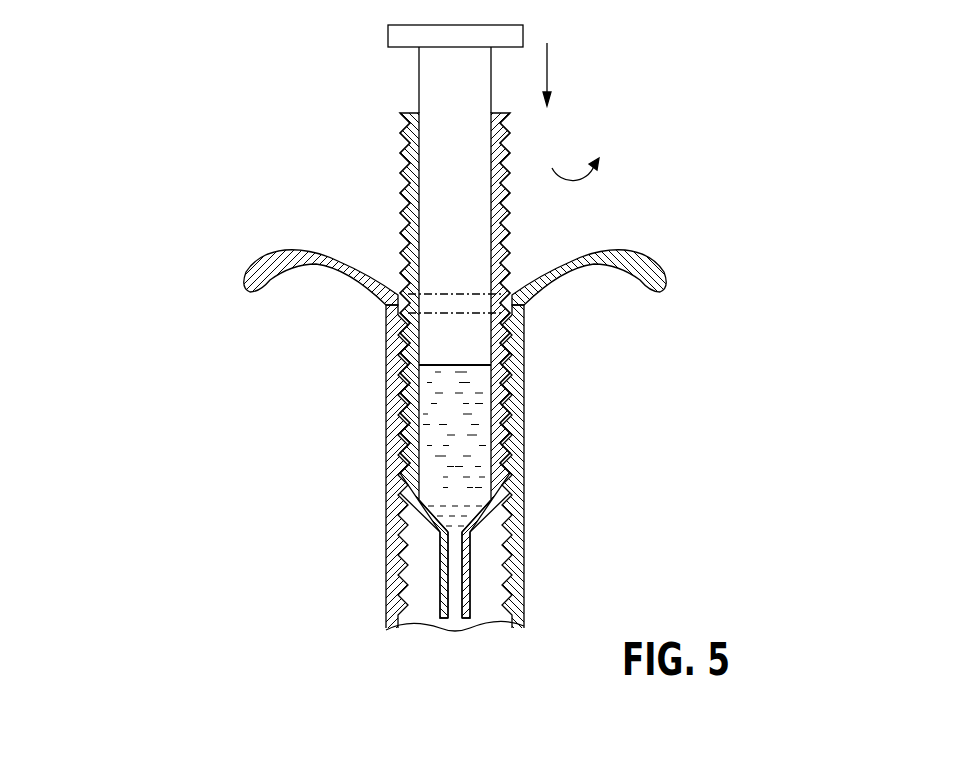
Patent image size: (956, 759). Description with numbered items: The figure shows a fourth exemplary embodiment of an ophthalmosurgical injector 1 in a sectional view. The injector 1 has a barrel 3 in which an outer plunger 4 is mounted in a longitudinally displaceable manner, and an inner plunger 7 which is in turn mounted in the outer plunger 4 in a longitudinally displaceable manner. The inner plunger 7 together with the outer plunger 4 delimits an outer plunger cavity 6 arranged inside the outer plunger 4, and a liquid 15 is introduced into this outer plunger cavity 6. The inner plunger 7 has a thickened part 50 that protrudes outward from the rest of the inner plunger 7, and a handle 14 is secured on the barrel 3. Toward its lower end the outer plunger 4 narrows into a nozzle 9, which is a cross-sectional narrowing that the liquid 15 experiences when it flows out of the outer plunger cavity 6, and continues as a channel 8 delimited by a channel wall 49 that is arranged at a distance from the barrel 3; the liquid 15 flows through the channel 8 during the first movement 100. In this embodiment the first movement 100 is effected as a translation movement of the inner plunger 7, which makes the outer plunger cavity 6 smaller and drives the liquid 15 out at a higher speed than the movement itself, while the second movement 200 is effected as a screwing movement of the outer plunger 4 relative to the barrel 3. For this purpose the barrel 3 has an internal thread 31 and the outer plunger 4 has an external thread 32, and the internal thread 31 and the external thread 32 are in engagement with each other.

The ophthalmosurgical injector 1 is at (406, 328).
The barrel 3 is at (388, 600).
The outer plunger 4 is at (405, 180).
The outer plunger cavity 6 is at (394, 445).
The inner plunger 7 is at (419, 80).
The channel 8 is at (462, 587).
The nozzle 9 is at (425, 527).
The handle 14 is at (282, 248).
The liquid 15 is at (421, 460).
The internal thread 31 is at (396, 576).
The external thread 32 is at (403, 142).
The channel wall 49 is at (470, 553).
The thickened part 50 is at (388, 37).
The first movement 100 is at (549, 63).
The second movement 200 is at (597, 170).